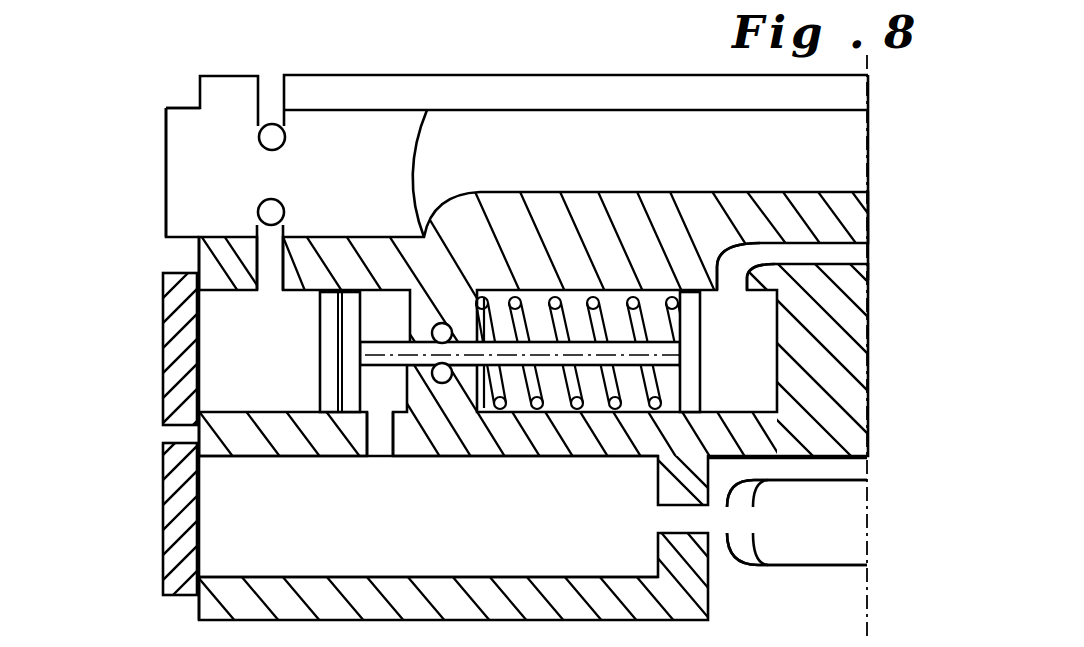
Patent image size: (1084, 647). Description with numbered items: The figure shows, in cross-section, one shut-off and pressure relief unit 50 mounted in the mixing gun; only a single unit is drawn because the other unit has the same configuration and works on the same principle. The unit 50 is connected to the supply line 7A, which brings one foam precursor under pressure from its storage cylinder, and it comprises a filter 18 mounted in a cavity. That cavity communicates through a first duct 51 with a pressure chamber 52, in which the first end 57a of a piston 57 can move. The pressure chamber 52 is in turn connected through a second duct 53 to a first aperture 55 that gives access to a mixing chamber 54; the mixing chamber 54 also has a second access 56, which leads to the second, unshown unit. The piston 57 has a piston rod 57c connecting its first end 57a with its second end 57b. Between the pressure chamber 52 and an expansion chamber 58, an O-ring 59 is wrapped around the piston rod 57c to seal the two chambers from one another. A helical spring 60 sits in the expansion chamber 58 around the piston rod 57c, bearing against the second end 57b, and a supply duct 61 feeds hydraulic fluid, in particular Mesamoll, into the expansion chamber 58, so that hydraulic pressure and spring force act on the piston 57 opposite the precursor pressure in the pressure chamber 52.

The supply line 7A is at (797, 522).
The filter 18 is at (563, 535).
The shut-off and pressure relief unit 50 is at (172, 255).
The first duct 51 is at (383, 440).
The pressure chamber 52 is at (240, 345).
The second duct 53 is at (270, 262).
The mixing chamber 54 is at (218, 183).
The first aperture 55 is at (276, 213).
The second access 56 is at (277, 140).
The piston 57 is at (504, 352).
The first end of the piston 57a is at (327, 362).
The second end of the piston 57b is at (697, 355).
The piston rod 57c is at (398, 365).
The expansion chamber 58 is at (752, 336).
The O-ring 59 is at (440, 384).
The helical spring 60 is at (530, 258).
The supply duct 61 is at (860, 256).